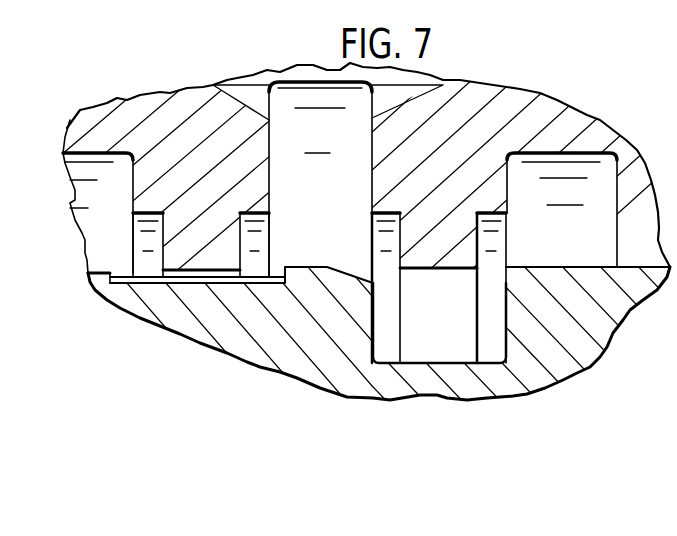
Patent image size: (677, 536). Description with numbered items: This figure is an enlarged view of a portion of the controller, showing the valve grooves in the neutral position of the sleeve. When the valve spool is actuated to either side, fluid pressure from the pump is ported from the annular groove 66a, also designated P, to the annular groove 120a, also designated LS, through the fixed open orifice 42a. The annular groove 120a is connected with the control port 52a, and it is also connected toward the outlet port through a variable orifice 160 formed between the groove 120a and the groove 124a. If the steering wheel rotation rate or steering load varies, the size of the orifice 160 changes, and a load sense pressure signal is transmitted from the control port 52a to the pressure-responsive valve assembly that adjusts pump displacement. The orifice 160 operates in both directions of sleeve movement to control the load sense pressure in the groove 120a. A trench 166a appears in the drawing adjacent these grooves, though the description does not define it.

The fixed open orifice 42a is at (256, 300).
The control port 52a is at (330, 71).
The annular groove 66a is at (128, 187).
The annular groove 120a is at (334, 137).
The groove 124a is at (527, 175).
The variable orifice 160 is at (341, 268).
The trench 166a is at (436, 363).